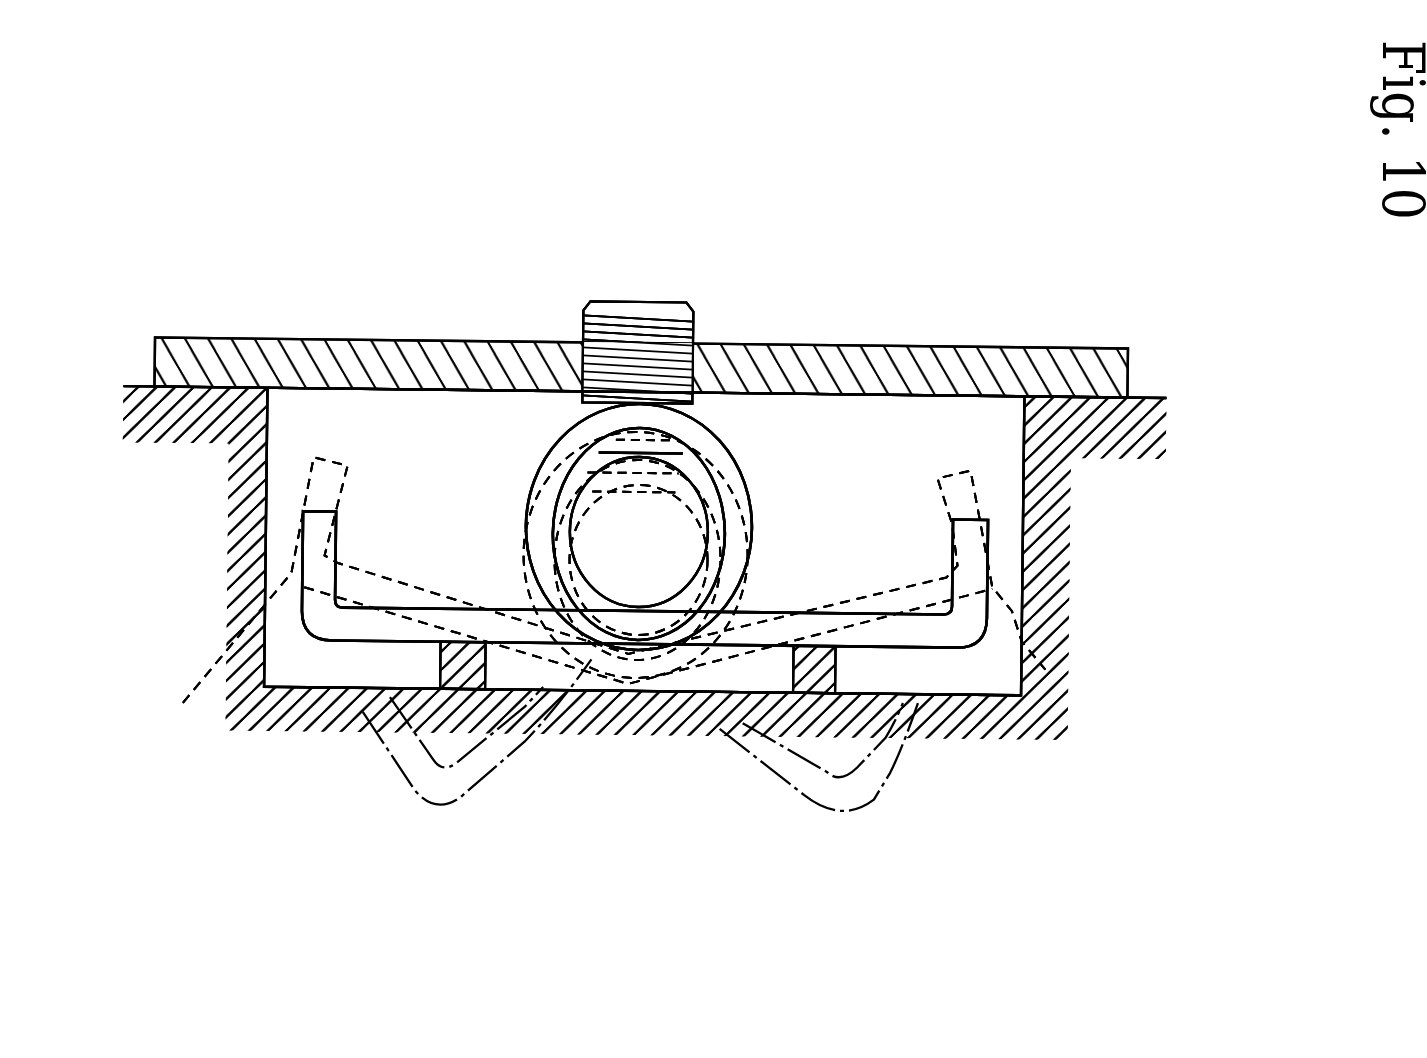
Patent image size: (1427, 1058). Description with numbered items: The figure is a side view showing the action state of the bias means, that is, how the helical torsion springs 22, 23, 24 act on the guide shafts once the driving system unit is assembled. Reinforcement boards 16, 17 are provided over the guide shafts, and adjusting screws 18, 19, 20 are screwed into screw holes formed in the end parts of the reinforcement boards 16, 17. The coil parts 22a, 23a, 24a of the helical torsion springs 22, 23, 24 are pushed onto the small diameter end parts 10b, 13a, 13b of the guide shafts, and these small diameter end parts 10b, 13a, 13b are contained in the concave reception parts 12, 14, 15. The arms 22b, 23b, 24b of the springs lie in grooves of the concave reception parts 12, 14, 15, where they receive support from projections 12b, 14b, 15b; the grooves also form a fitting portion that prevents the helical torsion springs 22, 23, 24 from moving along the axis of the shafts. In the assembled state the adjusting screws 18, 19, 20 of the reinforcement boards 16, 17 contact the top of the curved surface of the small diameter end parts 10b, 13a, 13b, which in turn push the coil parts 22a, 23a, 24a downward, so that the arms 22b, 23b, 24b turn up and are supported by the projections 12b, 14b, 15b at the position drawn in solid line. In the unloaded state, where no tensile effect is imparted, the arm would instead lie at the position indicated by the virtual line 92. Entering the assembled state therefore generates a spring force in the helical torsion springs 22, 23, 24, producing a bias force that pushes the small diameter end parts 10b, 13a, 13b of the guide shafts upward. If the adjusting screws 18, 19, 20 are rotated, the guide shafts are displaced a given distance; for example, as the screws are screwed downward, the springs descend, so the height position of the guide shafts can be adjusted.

The small diameter end part 10b is at (700, 508).
The concave reception part 12 is at (1023, 474).
The projection 12b is at (520, 693).
The small diameter end part 13a is at (700, 508).
The small diameter end part 13b is at (700, 508).
The concave reception part 14 is at (1023, 474).
The projection 14b is at (520, 693).
The concave reception part 15 is at (1023, 474).
The projection 15b is at (520, 693).
The reinforcement board 16 is at (875, 345).
The reinforcement board 17 is at (875, 345).
The adjusting screw 18 is at (642, 303).
The adjusting screw 19 is at (642, 303).
The adjusting screw 20 is at (642, 303).
The helical torsion spring 22 is at (712, 441).
The helical torsion spring 23 is at (712, 441).
The helical torsion spring 24 is at (712, 441).
The coil part 22a is at (527, 497).
The coil part 23a is at (527, 497).
The coil part 24a is at (527, 497).
The arm 22b is at (313, 634).
The arm 23b is at (313, 634).
The arm 24b is at (313, 634).
The virtual line 92 is at (417, 803).